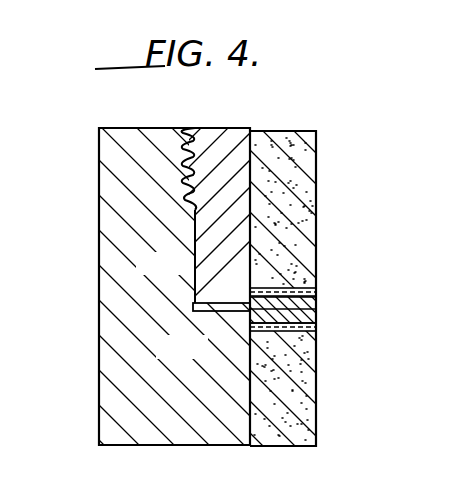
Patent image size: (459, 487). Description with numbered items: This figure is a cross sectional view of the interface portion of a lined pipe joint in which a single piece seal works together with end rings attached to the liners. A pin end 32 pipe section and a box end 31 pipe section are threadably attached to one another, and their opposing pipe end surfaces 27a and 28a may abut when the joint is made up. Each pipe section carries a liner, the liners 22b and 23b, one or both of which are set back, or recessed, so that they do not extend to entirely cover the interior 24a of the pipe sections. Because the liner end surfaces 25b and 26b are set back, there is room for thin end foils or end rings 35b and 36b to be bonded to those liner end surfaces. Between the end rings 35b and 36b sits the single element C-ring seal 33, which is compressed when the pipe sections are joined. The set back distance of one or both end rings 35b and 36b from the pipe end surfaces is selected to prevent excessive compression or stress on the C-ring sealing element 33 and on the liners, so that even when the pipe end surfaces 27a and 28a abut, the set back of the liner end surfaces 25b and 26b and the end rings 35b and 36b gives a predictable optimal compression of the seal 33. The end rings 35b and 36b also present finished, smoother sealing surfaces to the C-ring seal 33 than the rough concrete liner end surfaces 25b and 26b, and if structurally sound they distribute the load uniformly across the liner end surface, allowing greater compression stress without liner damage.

The box end pipe section 31 is at (99, 172).
The pin end pipe section 32 is at (227, 131).
The pipe end surface 27a is at (210, 303).
The pipe end surface 28a is at (209, 313).
The interior of the pipe sections 24a is at (250, 167).
The liner 22b is at (312, 214).
The liner end surface 25b is at (280, 290).
The end ring 35b is at (316, 294).
The single element C-ring seal 33 is at (318, 307).
The end ring 36b is at (318, 330).
The liner end surface 26b is at (283, 332).
The liner 23b is at (312, 416).